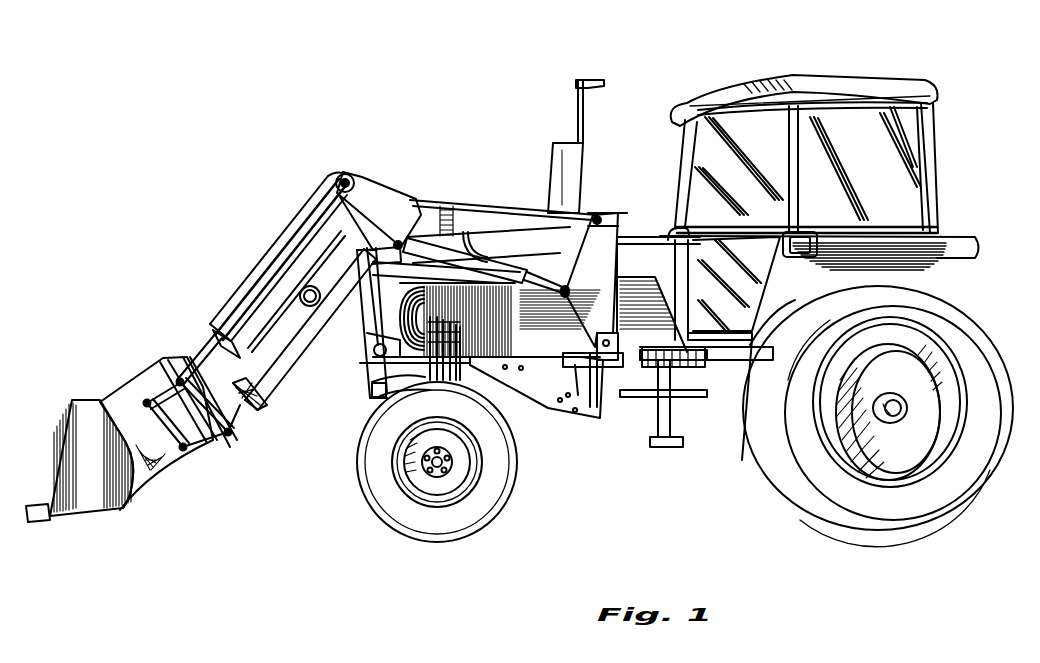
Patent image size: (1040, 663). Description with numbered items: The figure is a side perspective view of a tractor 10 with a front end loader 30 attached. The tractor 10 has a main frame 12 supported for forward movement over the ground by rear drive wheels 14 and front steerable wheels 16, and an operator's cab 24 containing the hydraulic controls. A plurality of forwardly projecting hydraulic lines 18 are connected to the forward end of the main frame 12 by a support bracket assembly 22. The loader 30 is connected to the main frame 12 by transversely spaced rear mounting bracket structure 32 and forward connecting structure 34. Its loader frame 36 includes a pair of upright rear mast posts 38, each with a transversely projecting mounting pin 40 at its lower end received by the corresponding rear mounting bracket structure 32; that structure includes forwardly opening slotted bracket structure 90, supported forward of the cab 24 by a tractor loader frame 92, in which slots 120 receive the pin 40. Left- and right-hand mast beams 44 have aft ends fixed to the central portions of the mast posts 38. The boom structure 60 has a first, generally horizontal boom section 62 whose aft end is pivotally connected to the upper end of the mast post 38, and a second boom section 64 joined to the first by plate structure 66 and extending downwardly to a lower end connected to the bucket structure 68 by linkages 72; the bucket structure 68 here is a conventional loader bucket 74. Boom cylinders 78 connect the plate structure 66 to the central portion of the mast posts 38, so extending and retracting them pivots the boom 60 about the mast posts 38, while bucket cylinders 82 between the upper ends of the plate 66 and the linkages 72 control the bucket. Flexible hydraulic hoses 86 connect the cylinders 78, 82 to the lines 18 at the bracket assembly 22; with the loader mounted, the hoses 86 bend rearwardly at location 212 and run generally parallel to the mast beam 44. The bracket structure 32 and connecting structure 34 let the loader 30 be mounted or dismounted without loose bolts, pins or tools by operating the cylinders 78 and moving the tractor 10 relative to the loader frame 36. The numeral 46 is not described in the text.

The tractor 10 is at (548, 80).
The main frame 12 is at (715, 393).
The rear drive wheels 14 is at (726, 447).
The front steerable wheels 16 is at (497, 512).
The hydraulic lines 18 is at (487, 363).
The support bracket assembly 22 is at (377, 407).
The cab 24 is at (818, 82).
The front end loader 30 is at (317, 161).
The rear mounting bracket structure 32 is at (581, 399).
The forward connecting structure 34 is at (358, 359).
The loader frame 36 is at (290, 260).
The mast post 38 is at (617, 208).
The mounting pin 40 is at (606, 338).
The mast beam 44 is at (423, 272).
The upper mast bracket 46 is at (356, 336).
The boom structure 60 is at (427, 207).
The first boom section 62 is at (480, 203).
The second boom section 64 is at (333, 250).
The plate structure 66 is at (370, 205).
The bucket structure 68 is at (163, 479).
The linkages 72 is at (213, 445).
The loader bucket 74 is at (92, 472).
The boom cylinders 78 is at (487, 257).
The bucket cylinders 82 is at (262, 293).
The hydraulic lines (flexible hoses) 86 is at (392, 288).
The slotted bracket structure 90 is at (618, 333).
The tractor loader frame 92 is at (600, 405).
The slot 120 is at (597, 347).
The location (hose bend) 212 is at (333, 203).